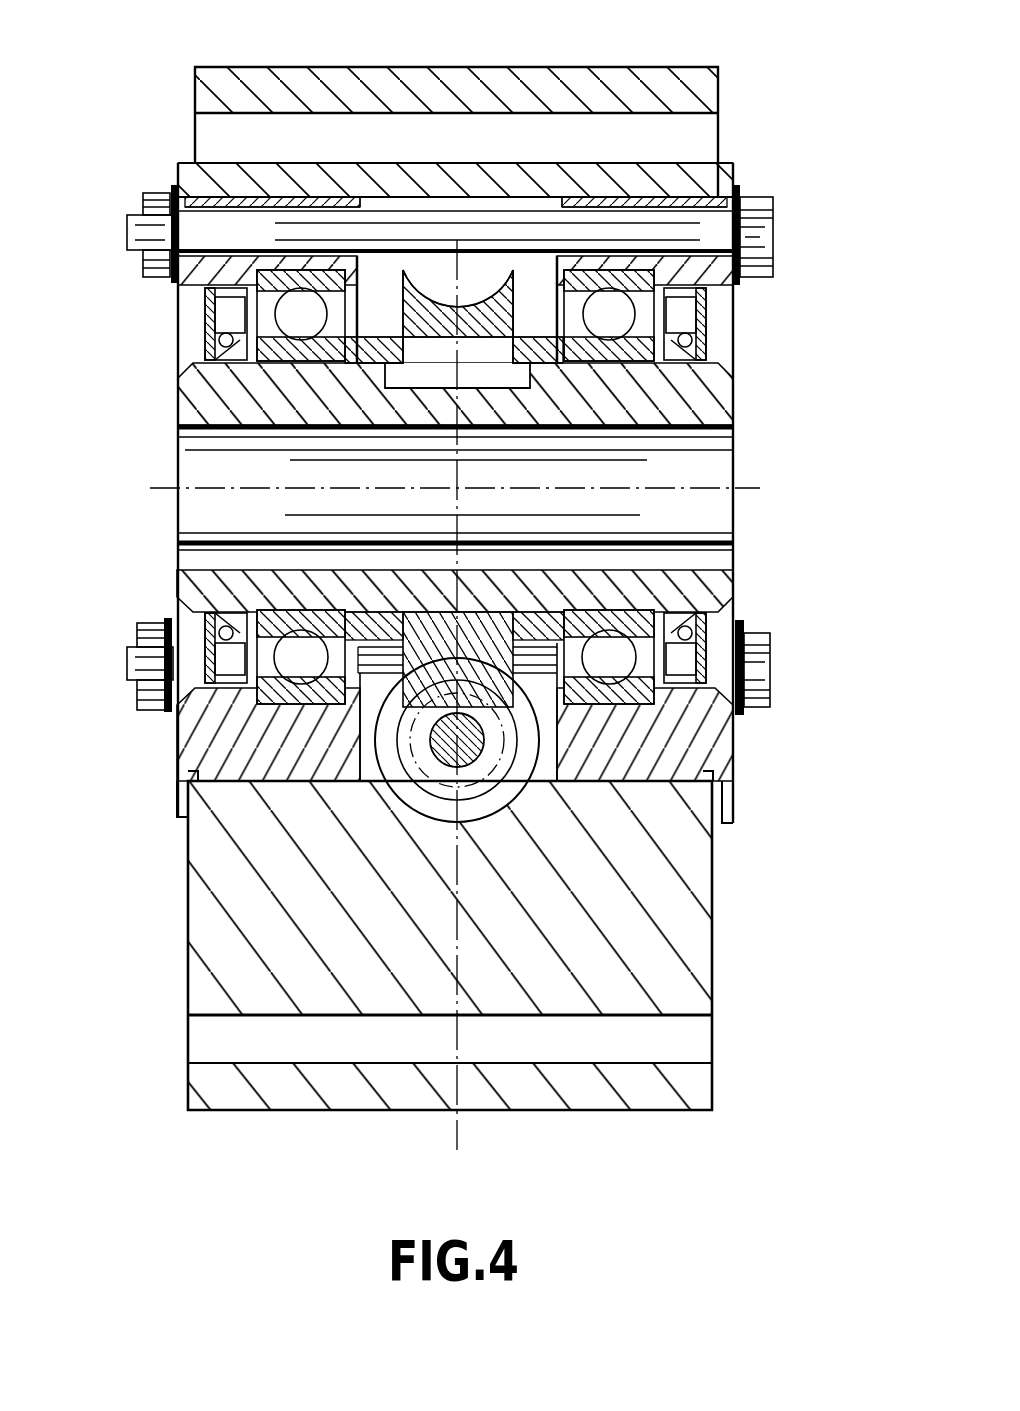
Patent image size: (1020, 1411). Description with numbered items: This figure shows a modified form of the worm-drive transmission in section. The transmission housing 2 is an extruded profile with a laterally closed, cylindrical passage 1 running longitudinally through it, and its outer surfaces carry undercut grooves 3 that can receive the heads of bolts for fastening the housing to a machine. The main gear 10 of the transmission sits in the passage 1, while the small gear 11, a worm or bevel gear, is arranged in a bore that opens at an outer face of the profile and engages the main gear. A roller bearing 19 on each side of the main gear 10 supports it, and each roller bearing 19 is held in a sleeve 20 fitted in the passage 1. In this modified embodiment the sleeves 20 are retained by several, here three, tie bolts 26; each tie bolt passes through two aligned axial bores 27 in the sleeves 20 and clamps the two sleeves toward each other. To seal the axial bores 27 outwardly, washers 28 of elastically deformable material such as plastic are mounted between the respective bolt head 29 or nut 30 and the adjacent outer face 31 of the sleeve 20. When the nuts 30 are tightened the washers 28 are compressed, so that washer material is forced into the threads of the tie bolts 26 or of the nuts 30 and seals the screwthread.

The passage 1 is at (381, 300).
The transmission housing 2 is at (299, 1132).
The grooves 3 is at (673, 125).
The main gear 10 is at (518, 305).
The small gear 11 is at (410, 772).
The roller bearing 19 is at (735, 350).
The sleeve 20 is at (210, 738).
The tie bolts 26 is at (230, 217).
The axial bores 27 is at (680, 197).
The washers 28 is at (738, 190).
The bolt head 29 is at (767, 277).
The nut 30 is at (143, 208).
The outer face of the sleeve 31 is at (165, 782).